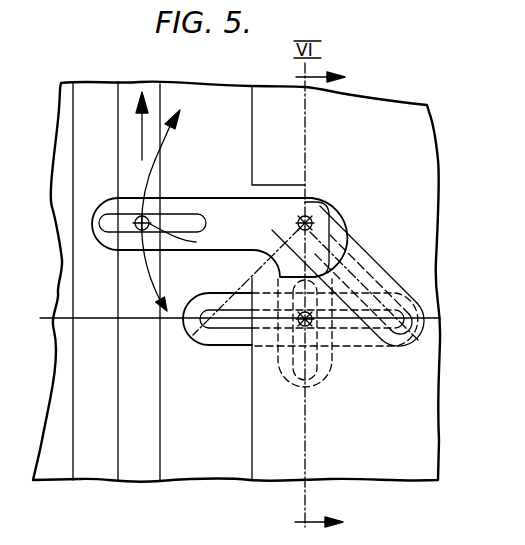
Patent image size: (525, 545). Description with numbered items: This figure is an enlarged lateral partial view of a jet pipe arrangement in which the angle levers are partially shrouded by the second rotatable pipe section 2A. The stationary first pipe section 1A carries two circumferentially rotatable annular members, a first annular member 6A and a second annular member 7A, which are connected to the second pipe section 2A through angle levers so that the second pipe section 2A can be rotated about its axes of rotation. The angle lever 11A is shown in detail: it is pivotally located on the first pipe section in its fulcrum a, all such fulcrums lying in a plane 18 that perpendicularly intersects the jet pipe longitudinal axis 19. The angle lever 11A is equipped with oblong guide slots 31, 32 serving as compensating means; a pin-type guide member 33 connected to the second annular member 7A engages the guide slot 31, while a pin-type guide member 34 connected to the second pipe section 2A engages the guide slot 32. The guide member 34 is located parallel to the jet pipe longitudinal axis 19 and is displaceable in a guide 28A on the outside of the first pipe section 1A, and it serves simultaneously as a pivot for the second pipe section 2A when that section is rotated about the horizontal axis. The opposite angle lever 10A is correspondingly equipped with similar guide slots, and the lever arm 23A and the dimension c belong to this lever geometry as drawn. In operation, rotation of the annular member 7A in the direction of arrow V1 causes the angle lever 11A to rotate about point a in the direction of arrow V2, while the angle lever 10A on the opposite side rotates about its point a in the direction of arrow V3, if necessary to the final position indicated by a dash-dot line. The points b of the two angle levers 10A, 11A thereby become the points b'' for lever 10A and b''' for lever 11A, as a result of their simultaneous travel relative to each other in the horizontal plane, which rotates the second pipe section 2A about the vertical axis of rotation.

The first pipe section 1A is at (207, 468).
The second rotatable pipe section 2A is at (375, 470).
The first annular member 6A is at (53, 470).
The second annular member 7A is at (135, 470).
The angle lever 10A is at (391, 255).
The angle lever 11A is at (306, 190).
The plane 18 is at (307, 142).
The jet pipe longitudinal axis 19 is at (62, 314).
The upper lever arm 23A is at (234, 207).
The guide 28A is at (230, 346).
The oblong guide slot 31 is at (111, 217).
The oblong guide slot 32 is at (310, 397).
The pin-type guide member 33 is at (128, 233).
The pin-type guide member 34 is at (288, 349).
The fulcrum a is at (297, 221).
The point of angle lever b is at (322, 351).
The displaced point of lever 10A b'' is at (369, 311).
The displaced point of lever 11A b''' is at (235, 300).
The distance c is at (180, 238).
The direction of rotation of annular member V1 is at (137, 134).
The direction of rotation of angle lever 11A V2 is at (167, 142).
The direction of rotation of angle lever 10A V3 is at (158, 278).